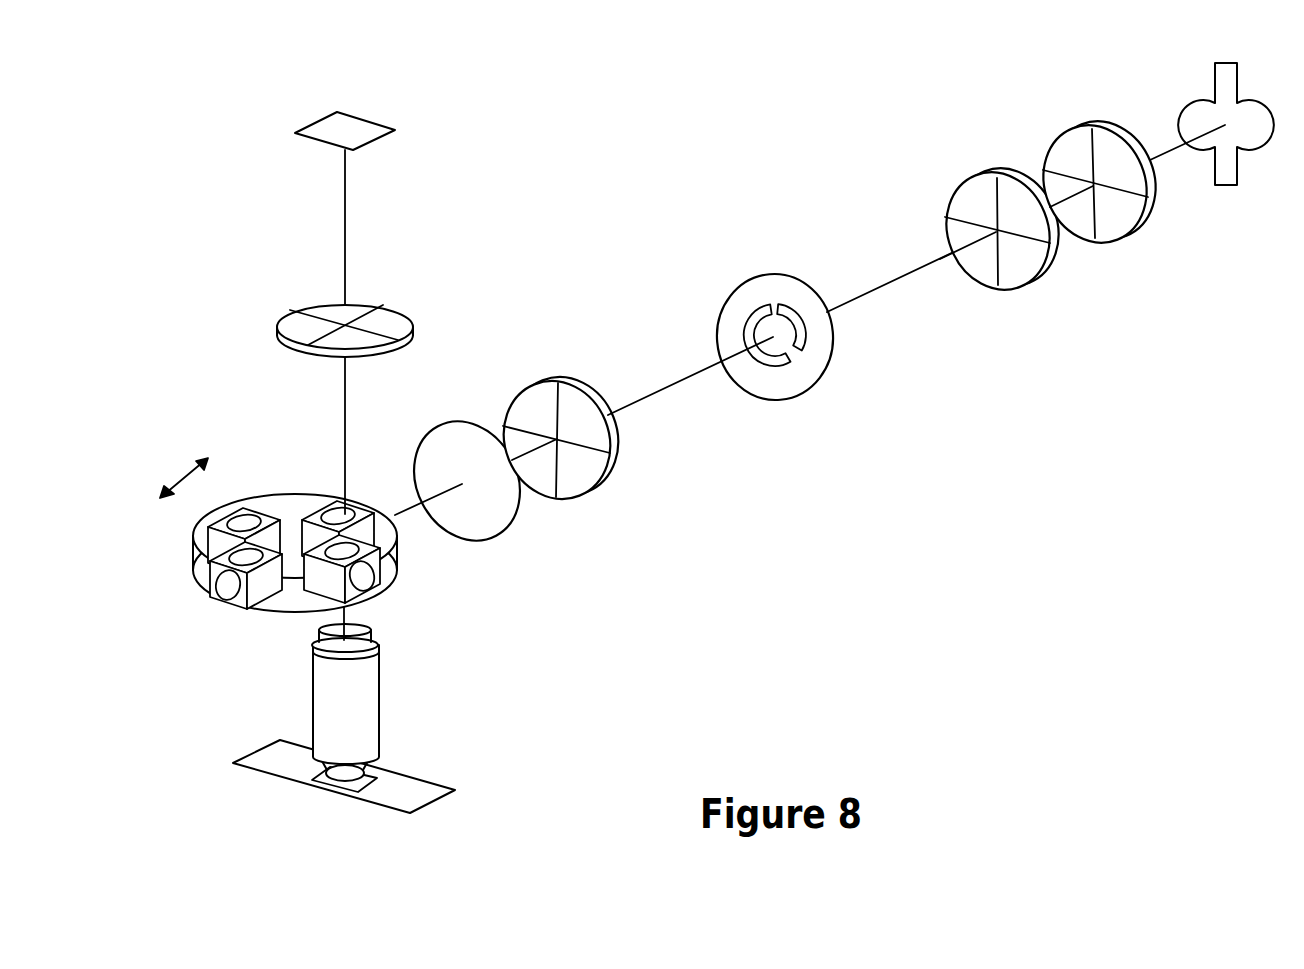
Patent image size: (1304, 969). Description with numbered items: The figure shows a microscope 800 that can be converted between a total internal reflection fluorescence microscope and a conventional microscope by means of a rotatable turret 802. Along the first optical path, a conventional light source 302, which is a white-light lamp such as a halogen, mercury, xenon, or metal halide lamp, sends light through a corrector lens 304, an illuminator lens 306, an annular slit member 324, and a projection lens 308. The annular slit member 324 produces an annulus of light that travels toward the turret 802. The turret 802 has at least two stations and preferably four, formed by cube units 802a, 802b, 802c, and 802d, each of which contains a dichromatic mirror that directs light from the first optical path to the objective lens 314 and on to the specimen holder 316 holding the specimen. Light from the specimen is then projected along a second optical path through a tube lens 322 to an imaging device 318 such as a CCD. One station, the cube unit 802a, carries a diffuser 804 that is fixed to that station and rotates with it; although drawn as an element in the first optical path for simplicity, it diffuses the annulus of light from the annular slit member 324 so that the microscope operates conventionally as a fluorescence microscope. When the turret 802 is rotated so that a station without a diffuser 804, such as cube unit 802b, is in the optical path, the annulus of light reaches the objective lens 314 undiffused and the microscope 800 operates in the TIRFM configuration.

The microscope 800 is at (208, 80).
The conventional light source 302 is at (1220, 78).
The corrector lens 304 is at (1062, 147).
The illuminator lens 306 is at (958, 197).
The annular slit member 324 is at (805, 377).
The projection lens 308 is at (590, 478).
The diffuser 804 is at (500, 522).
The rotatable turret 802 is at (298, 561).
The cube unit 802a is at (332, 510).
The cube unit 802b is at (365, 575).
The cube unit 802c is at (230, 587).
The cube unit 802d is at (240, 520).
The tube lens 322 is at (290, 318).
The imaging device 318 is at (372, 127).
The objective lens 314 is at (370, 698).
The specimen holder 316 is at (418, 788).